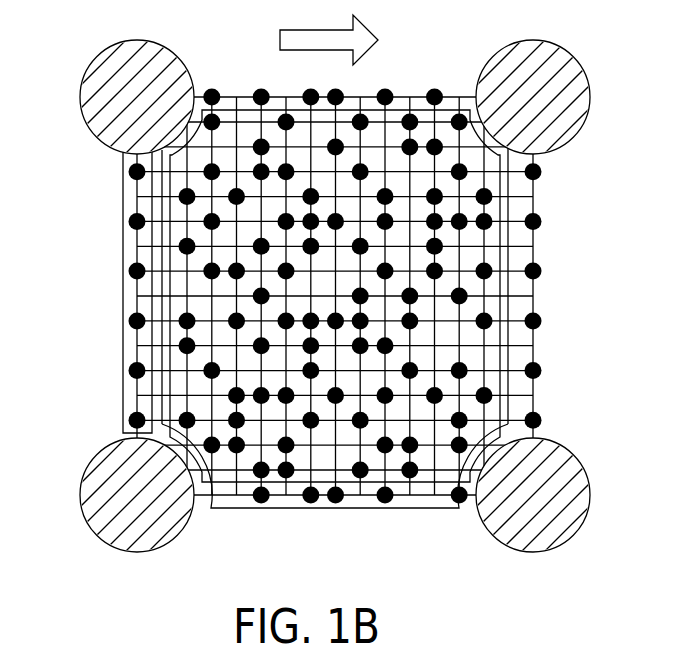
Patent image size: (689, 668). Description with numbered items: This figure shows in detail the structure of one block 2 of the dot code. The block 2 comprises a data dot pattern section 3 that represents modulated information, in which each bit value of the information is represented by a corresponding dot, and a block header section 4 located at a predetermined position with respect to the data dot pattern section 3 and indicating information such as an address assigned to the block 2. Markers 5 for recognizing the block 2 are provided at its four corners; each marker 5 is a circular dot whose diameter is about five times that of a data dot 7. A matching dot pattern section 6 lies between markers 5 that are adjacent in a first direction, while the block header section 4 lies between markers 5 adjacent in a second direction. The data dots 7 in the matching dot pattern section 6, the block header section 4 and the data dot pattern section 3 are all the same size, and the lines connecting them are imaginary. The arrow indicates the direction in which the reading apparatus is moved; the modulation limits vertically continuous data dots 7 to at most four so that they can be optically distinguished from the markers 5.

The block 2 is at (45, 88).
The data dot pattern section 3 is at (500, 260).
The block header section 4 is at (309, 508).
The marker 5 is at (573, 450).
The matching dot pattern section 6 is at (122, 303).
The data dot 7 is at (465, 365).